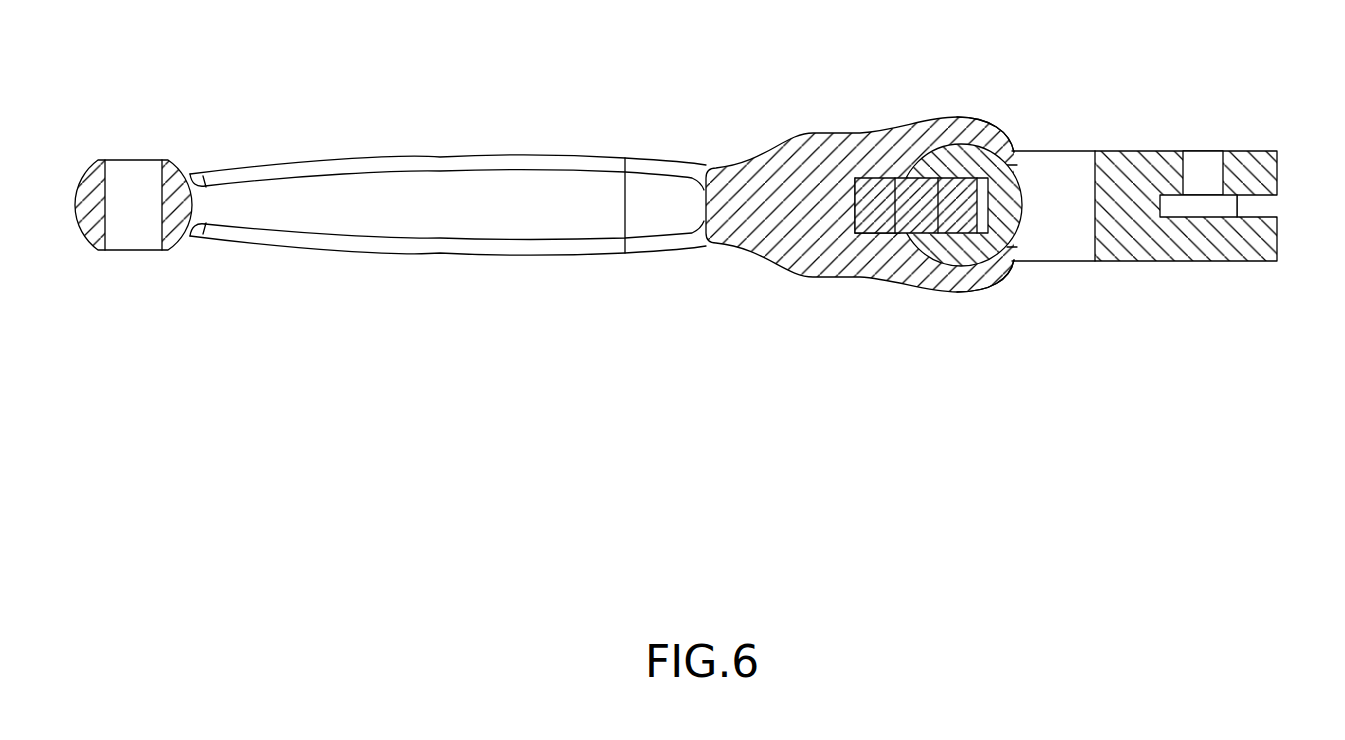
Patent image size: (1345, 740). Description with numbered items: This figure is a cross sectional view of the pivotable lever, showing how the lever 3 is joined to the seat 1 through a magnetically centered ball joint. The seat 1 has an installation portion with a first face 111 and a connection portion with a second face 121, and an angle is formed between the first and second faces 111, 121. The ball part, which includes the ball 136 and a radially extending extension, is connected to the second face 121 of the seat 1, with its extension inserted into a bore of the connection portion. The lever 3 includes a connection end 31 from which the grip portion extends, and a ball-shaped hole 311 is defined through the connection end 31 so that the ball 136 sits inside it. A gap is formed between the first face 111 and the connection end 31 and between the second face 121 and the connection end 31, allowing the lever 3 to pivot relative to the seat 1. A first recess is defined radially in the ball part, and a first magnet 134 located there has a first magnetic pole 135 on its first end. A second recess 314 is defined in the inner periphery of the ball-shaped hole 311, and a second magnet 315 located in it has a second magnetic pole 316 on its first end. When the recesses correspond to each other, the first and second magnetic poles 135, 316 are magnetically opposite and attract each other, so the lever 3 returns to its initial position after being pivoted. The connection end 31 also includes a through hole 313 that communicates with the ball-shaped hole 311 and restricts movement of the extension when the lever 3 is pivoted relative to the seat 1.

The seat 1 is at (1076, 209).
The first face 111 is at (1095, 192).
The second face 121 is at (1050, 255).
The first magnet 134 is at (905, 209).
The first magnetic pole 135 is at (881, 178).
The ball 136 is at (1001, 148).
The lever 3 is at (305, 145).
The connection end 31 is at (881, 221).
The ball-shaped hole 311 is at (975, 266).
The through hole 313 is at (1024, 163).
The second recess 314 is at (868, 190).
The second magnet 315 is at (858, 240).
The second magnetic pole 316 is at (899, 180).